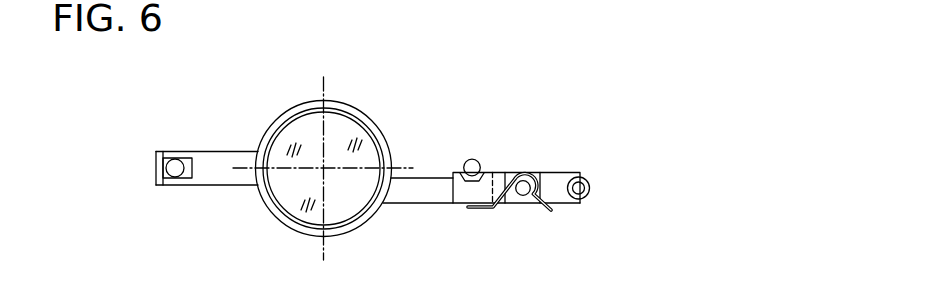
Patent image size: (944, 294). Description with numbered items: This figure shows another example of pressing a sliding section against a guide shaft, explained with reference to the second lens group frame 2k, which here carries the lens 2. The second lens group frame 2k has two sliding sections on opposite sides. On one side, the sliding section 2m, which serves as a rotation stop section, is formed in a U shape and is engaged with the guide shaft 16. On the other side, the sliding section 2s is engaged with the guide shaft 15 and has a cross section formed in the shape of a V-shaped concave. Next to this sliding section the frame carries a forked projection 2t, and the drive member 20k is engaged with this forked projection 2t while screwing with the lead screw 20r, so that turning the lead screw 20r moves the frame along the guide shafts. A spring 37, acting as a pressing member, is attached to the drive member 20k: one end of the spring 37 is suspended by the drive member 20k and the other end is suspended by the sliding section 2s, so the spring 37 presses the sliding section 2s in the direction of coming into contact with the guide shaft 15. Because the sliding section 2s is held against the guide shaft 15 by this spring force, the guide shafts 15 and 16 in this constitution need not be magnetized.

The lens barrel body 2 is at (337, 130).
The second lens group frame 2k is at (284, 119).
The sliding section 2m is at (170, 151).
The guide shaft 16 is at (174, 173).
The sliding section 2s is at (453, 179).
The forked projection 2t is at (494, 172).
The guide shaft 15 is at (473, 158).
The spring 37 is at (522, 175).
The drive member 20k is at (523, 201).
The lead screw 20r is at (590, 187).